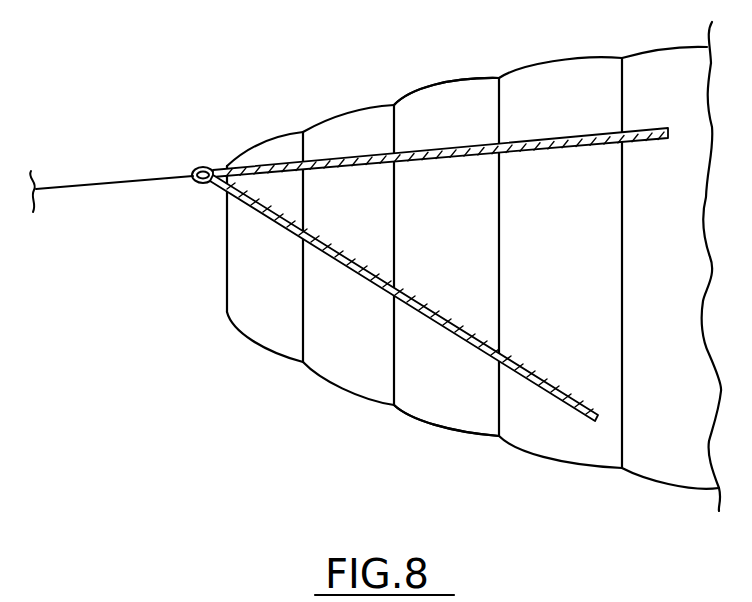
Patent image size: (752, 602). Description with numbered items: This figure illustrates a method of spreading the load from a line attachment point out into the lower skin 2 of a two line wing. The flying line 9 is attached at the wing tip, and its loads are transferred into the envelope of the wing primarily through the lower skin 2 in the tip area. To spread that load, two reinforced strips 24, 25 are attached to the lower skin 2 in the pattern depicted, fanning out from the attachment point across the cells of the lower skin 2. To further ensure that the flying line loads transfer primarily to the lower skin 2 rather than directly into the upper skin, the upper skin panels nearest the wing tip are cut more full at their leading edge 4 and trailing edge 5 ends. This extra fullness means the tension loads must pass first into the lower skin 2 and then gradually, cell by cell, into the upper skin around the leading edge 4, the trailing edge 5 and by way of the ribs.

The lower skin 2 is at (298, 298).
The leading edge 4 is at (443, 81).
The trailing edge 5 is at (421, 417).
The flying line 9 is at (143, 185).
The reinforced strip 24 is at (597, 146).
The reinforced strip 25 is at (515, 358).